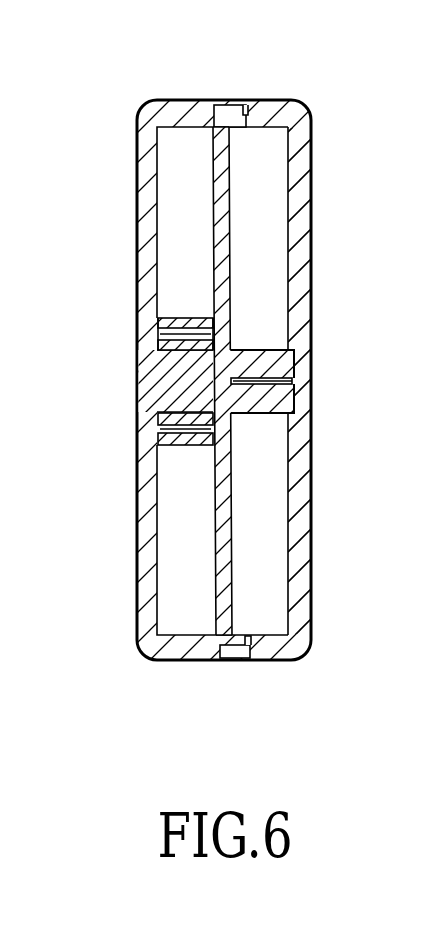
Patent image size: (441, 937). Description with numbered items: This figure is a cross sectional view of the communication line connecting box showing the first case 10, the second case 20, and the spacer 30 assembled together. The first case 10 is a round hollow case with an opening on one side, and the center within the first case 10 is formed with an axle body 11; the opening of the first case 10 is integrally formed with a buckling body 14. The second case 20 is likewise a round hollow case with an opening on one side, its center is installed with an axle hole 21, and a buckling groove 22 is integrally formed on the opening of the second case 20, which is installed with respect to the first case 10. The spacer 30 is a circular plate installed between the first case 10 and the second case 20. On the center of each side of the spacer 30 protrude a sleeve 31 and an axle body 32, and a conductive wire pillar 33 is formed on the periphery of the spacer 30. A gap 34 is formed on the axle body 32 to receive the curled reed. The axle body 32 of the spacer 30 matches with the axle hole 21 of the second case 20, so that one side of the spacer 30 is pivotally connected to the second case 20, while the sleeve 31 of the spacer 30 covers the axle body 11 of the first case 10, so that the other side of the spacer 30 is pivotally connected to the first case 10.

The first case 10 is at (147, 513).
The axle body 11 is at (170, 385).
The buckling body 14 is at (223, 118).
The second case 20 is at (300, 532).
The axle hole 21 is at (293, 367).
The buckling groove 22 is at (250, 116).
The spacer 30 is at (222, 587).
The sleeve 31 is at (157, 345).
The axle body 32 is at (283, 398).
The conductive wire pillar 33 is at (170, 317).
The gap 34 is at (257, 372).